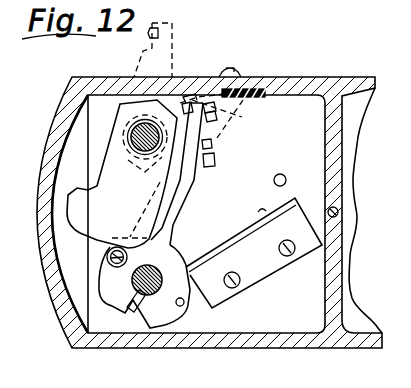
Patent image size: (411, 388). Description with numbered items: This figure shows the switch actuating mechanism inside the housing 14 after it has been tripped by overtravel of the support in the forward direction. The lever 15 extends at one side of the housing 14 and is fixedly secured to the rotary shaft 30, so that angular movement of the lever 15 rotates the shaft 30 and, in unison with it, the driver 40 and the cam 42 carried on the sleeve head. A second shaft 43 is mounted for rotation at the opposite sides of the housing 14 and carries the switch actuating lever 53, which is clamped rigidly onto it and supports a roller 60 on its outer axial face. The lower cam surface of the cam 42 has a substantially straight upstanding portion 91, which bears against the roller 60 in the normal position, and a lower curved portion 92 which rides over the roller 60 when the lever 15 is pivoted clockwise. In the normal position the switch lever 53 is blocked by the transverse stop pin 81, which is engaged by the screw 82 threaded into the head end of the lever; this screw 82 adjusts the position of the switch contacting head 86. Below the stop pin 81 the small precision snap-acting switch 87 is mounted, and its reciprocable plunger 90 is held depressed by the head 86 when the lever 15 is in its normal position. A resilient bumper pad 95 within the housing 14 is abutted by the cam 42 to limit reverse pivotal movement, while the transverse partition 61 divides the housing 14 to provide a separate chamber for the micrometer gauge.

The housing 14 is at (322, 78).
The lever 15 is at (226, 75).
The rotary shaft 30 is at (130, 134).
The driver 40 is at (369, 180).
The cam 42 is at (110, 172).
The second shaft 43 is at (156, 294).
The switch actuating lever 53 is at (175, 204).
The roller 60 is at (103, 268).
The transverse partition 61 is at (335, 126).
The stop pin 81 is at (286, 178).
The screw 82 is at (214, 122).
The switch contacting head 86 is at (212, 164).
The snap-acting switch 87 is at (257, 272).
The reciprocable plunger 90 is at (264, 212).
The upstanding portion 91 is at (56, 190).
The lower curved portion 92 is at (106, 258).
The resilient bumper pad 95 is at (270, 96).